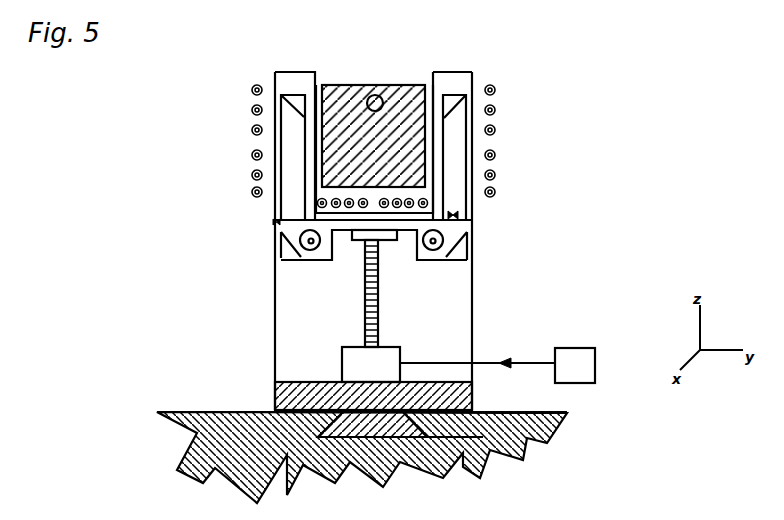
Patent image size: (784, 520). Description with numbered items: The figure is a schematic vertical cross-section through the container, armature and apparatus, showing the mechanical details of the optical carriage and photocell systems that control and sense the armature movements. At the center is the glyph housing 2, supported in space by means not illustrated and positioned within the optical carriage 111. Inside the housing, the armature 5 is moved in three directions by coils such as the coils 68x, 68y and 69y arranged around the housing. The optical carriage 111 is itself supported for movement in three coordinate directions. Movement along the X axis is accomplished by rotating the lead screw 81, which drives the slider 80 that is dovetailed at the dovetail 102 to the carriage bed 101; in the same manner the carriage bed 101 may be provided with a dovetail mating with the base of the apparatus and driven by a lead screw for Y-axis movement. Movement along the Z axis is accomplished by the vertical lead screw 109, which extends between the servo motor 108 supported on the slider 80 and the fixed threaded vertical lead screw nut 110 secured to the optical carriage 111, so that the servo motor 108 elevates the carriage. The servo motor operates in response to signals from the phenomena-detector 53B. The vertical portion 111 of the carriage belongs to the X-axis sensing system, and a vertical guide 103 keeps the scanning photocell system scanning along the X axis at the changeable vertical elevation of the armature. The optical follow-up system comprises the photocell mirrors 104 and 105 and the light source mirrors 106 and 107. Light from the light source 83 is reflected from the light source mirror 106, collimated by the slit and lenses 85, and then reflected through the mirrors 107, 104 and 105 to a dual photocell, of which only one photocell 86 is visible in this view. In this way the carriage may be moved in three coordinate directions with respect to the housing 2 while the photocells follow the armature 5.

The glyph housing 2 is at (347, 95).
The armature 5 is at (378, 95).
The photocell mirror 104 is at (292, 88).
The light source mirror 107 is at (460, 92).
The coil 68x is at (316, 215).
The coil 68y is at (501, 118).
The coil 69y is at (247, 101).
The slit and lenses 85 is at (277, 224).
The photocell mirror 105 is at (275, 253).
The light source mirror 106 is at (457, 253).
The optical carriage 111 is at (447, 262).
The photocell 86 is at (314, 251).
The light source 83 is at (431, 251).
The vertical lead screw nut 110 is at (379, 243).
The vertical lead screw 109 is at (378, 296).
The servo motor 108 is at (400, 353).
The phenomena-detector 53B is at (497, 356).
The vertical guide 103 is at (275, 312).
The slider 80 is at (287, 392).
The lead screw 81 is at (362, 418).
The carriage bed 101 is at (565, 416).
The dovetail 102 is at (490, 463).